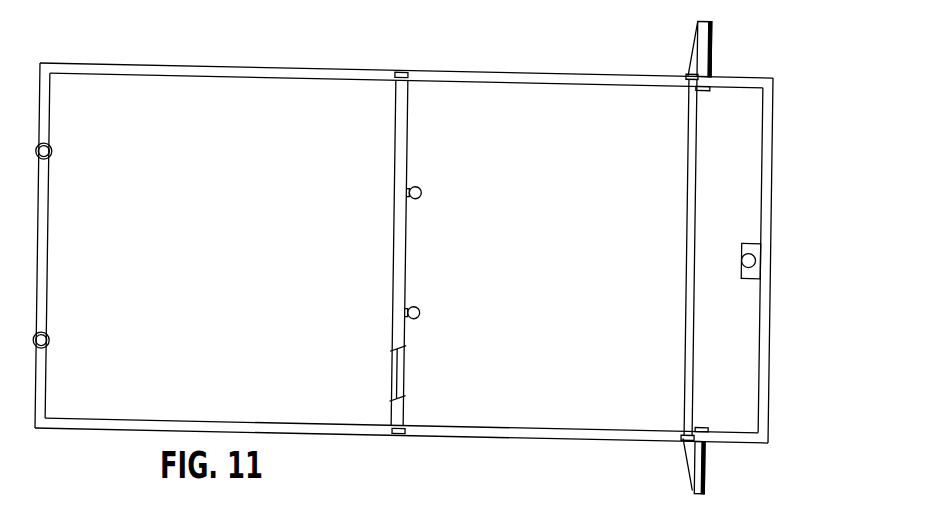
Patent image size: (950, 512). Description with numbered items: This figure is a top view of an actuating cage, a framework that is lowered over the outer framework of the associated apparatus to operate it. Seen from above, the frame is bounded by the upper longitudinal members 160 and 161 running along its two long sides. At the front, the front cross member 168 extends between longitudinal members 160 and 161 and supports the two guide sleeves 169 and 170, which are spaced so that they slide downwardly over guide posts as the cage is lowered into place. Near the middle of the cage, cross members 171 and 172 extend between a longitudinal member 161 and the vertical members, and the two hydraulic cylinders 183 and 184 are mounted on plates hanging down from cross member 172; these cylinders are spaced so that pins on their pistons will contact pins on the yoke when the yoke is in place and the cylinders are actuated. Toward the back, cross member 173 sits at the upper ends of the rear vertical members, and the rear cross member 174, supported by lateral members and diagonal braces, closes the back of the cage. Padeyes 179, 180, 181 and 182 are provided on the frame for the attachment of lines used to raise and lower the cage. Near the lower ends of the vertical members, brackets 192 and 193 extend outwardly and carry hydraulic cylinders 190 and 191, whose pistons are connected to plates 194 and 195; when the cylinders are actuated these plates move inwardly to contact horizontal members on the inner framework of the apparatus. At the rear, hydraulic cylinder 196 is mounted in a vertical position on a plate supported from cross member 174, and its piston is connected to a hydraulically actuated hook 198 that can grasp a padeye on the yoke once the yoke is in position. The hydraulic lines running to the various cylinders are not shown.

The upper longitudinal member 160 is at (306, 436).
The upper longitudinal member 161 is at (235, 67).
The front cross member 168 is at (47, 256).
The guide sleeve 169 is at (50, 340).
The guide sleeve 170 is at (52, 151).
The cross member 171 is at (406, 240).
The cross member 172 is at (406, 373).
The cross member 173 is at (686, 333).
The cross member 174 is at (772, 188).
The padeye 179 is at (402, 436).
The padeye 180 is at (683, 441).
The padeye 181 is at (407, 73).
The padeye 182 is at (687, 77).
The hydraulic cylinder 183 is at (421, 313).
The hydraulic cylinder 184 is at (423, 193).
The hydraulic cylinder 190 is at (708, 475).
The hydraulic cylinder 191 is at (713, 48).
The bracket 192 is at (686, 460).
The bracket 193 is at (691, 52).
The plate 194 is at (702, 428).
The plate 195 is at (704, 89).
The hydraulic cylinder 196 is at (750, 276).
The hydraulically actuated hook 198 is at (739, 262).